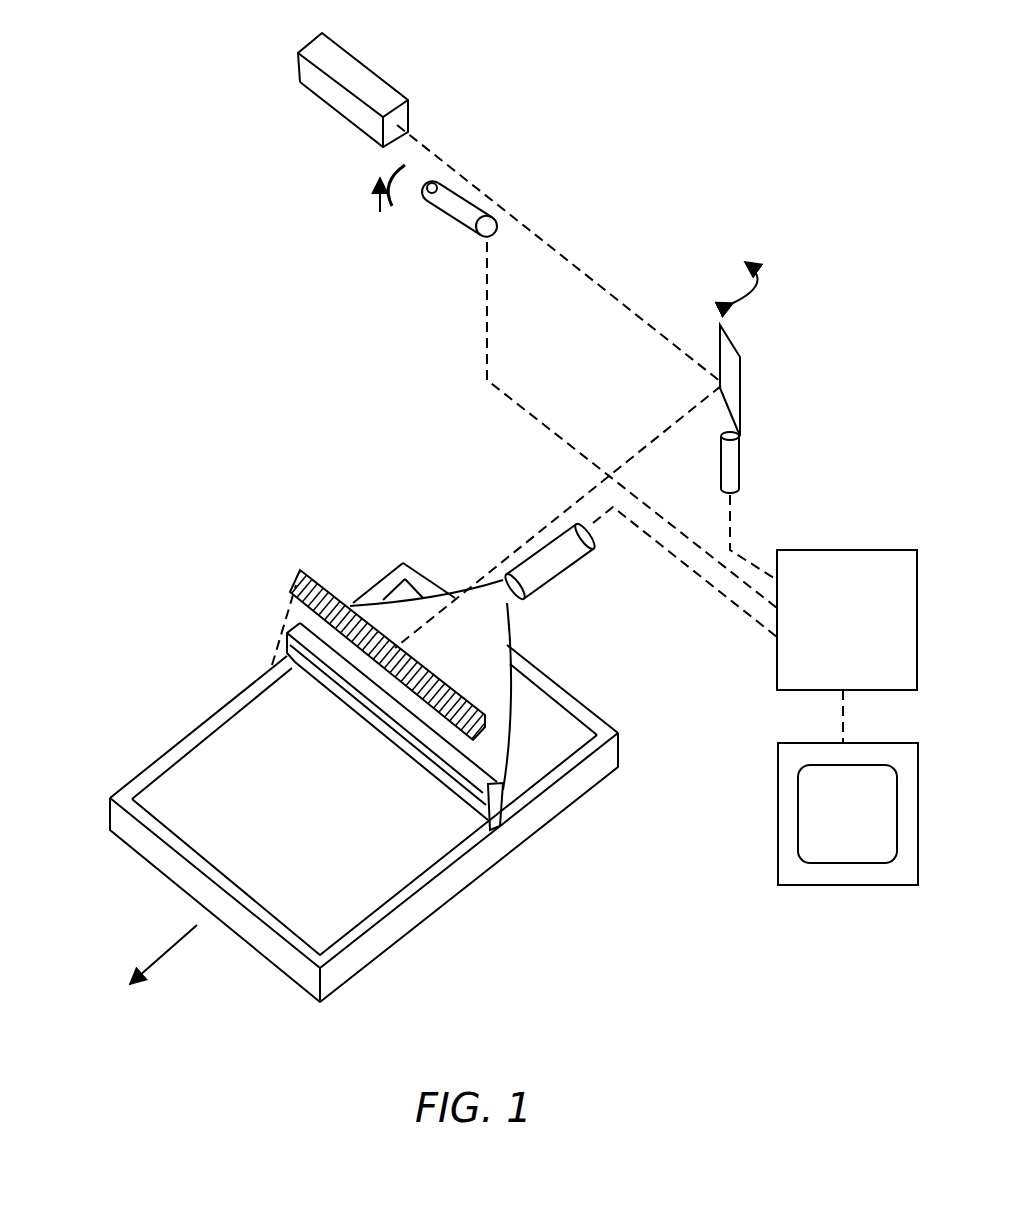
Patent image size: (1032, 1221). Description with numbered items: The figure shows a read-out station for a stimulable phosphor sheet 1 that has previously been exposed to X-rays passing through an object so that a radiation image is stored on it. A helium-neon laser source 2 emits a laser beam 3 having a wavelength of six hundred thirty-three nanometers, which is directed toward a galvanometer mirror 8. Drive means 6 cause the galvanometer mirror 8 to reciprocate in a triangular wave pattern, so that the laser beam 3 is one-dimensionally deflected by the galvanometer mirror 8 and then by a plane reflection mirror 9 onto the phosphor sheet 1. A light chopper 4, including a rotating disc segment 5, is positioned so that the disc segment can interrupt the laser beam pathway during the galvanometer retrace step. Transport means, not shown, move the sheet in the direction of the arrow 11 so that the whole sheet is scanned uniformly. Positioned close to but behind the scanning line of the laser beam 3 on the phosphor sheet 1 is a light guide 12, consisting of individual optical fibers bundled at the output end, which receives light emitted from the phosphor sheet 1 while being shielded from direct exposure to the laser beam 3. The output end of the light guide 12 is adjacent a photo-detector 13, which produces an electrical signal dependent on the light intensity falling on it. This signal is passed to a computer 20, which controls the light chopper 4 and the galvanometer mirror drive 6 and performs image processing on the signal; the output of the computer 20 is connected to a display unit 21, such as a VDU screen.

The stimulable phosphor sheet 1 is at (435, 911).
The helium-neon laser source 2 is at (343, 76).
The laser beam 3 is at (637, 312).
The light chopper 4 is at (455, 236).
The rotating disc segment 5 is at (417, 203).
The drive means 6 is at (732, 475).
The galvanometer mirror 8 is at (737, 403).
The plane reflection mirror 9 is at (293, 593).
The arrow 11 is at (187, 933).
The light guide 12 is at (492, 673).
The photo-detector 13 is at (577, 552).
The computer 20 is at (880, 563).
The display unit 21 is at (798, 820).